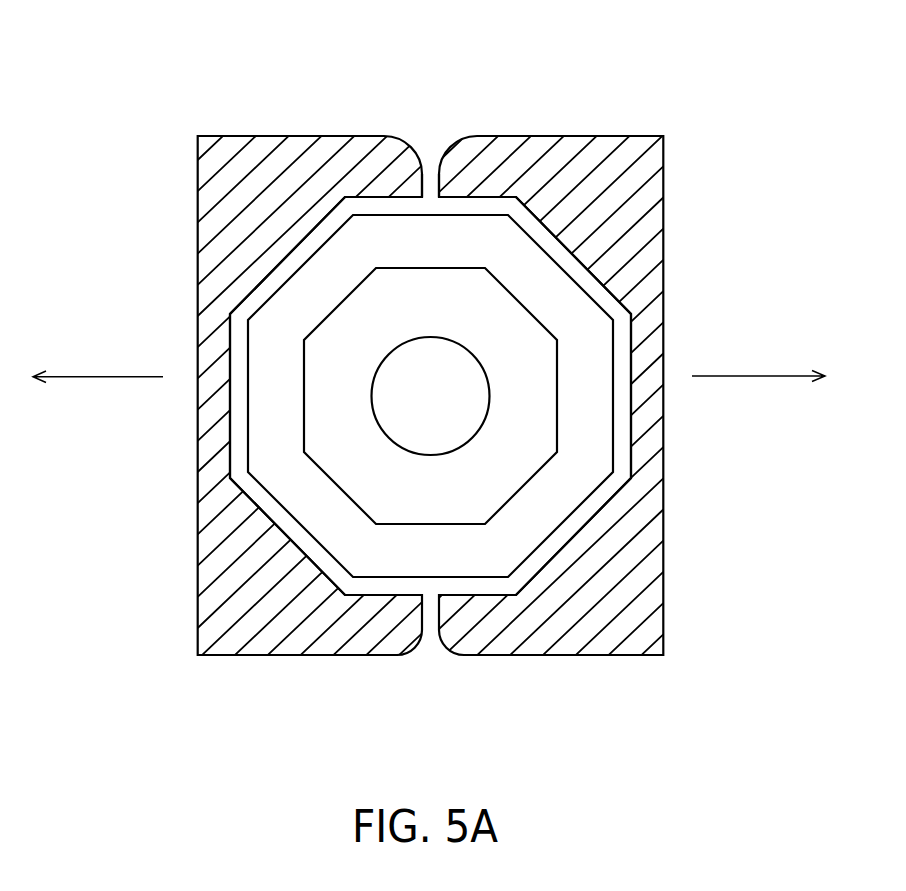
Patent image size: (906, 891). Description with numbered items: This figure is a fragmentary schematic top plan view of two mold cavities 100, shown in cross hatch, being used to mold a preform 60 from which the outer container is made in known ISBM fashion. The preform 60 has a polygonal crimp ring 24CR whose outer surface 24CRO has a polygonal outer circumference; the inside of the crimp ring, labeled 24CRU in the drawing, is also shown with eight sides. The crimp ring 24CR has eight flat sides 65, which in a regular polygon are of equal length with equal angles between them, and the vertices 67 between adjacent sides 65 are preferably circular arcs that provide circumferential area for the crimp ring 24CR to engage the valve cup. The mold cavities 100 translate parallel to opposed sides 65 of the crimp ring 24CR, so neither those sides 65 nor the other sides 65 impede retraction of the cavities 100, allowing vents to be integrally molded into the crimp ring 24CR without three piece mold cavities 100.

The mold cavities 100 is at (303, 655).
The outer surface of the crimp ring 24CRO is at (333, 233).
The polygonal crimp ring 24CR is at (290, 313).
The inner core of cooling ring 24CRU is at (475, 565).
The vertices 67 is at (320, 232).
The preform 60 is at (405, 233).
The sides 65 is at (432, 215).